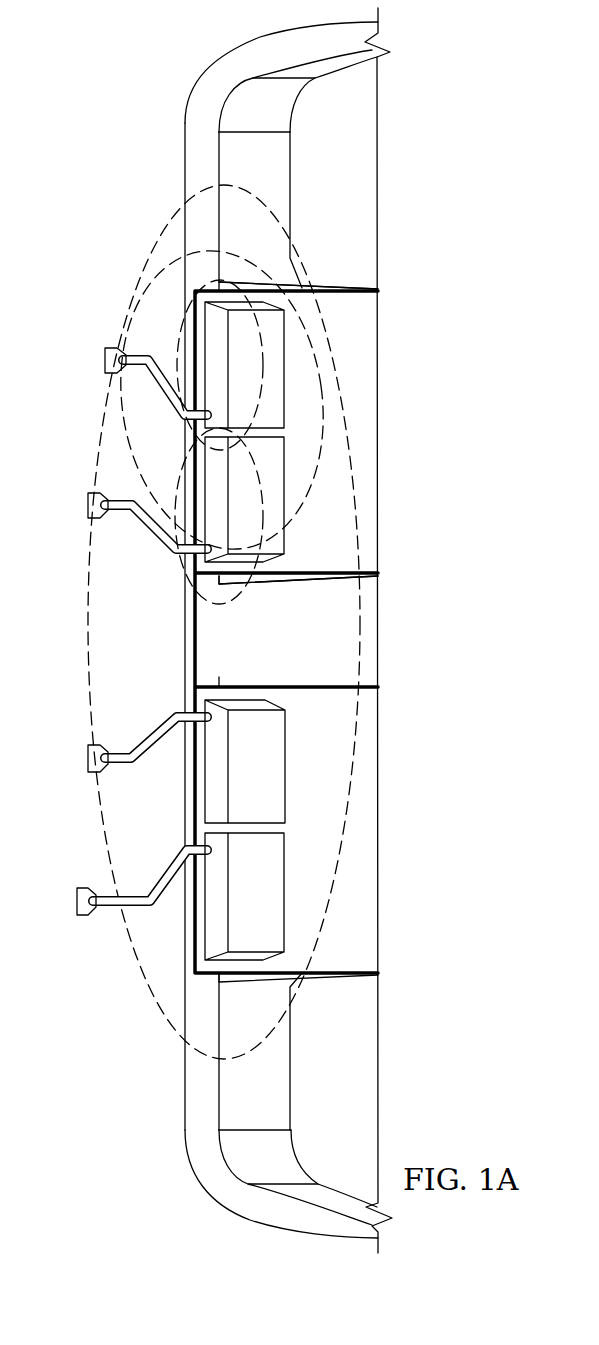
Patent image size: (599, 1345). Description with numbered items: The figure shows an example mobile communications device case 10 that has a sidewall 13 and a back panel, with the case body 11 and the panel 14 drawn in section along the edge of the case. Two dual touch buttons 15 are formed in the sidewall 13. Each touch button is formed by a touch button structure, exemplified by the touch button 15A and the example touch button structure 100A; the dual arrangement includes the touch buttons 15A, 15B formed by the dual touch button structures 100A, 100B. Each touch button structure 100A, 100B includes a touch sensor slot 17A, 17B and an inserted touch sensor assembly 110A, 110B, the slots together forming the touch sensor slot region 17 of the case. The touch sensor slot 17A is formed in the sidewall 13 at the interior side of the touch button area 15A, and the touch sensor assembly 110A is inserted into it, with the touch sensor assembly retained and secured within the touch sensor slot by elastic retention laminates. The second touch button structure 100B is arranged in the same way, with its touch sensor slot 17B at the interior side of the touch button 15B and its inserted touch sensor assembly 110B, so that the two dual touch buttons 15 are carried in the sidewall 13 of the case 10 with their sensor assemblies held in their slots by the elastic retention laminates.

The mobile communications device case 10 is at (110, 86).
The bumper cover 11 is at (222, 63).
The sidewall 13 is at (185, 162).
The vehicle body panel 14 is at (372, 152).
The dual touch buttons 15 is at (140, 977).
The touch button 15A is at (183, 350).
The touch button 15B is at (180, 488).
The mounting bracket 17 is at (238, 248).
The touch sensor slot 17A is at (217, 302).
The touch sensor slot 17B is at (221, 580).
The touch button structure 100A is at (265, 333).
The touch button structure 100B is at (207, 595).
The touch sensor assembly 110A is at (220, 378).
The touch sensor assembly 110B is at (217, 502).